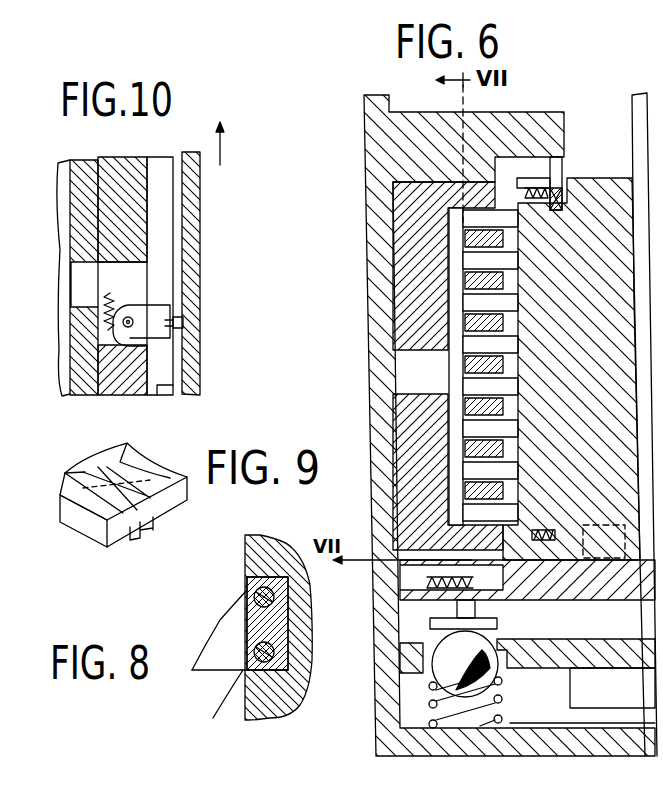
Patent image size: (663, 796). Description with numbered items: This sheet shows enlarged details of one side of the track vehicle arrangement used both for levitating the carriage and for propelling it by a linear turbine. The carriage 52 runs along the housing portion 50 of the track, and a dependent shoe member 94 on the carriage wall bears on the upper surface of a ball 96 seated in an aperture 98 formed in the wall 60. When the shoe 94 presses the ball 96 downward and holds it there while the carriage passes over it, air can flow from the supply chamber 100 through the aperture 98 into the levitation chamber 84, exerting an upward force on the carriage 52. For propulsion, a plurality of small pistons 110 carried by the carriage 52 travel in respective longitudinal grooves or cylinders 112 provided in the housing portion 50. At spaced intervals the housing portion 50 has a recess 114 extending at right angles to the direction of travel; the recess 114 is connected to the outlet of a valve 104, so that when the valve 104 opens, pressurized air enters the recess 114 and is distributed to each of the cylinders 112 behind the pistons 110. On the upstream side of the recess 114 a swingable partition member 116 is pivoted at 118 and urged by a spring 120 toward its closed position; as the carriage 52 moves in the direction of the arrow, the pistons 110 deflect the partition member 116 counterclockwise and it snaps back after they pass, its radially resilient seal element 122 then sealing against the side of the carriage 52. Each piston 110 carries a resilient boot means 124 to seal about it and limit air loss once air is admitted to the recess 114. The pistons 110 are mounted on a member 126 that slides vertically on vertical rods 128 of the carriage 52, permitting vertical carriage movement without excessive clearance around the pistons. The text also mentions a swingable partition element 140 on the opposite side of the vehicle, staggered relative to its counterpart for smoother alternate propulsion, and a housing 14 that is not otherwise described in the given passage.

In FIG. 6, the housing 14 is at (656, 350).
In FIG. 6, the housing portion 50 is at (366, 112).
In FIG. 10, the housing portion 50 is at (78, 162).
In FIG. 6, the carriage 52 is at (582, 168).
In FIG. 10, the carriage 52 is at (190, 189).
In FIG. 8, the carriage 52 is at (296, 713).
In FIG. 6, the wall 60 is at (655, 646).
In FIG. 6, the levitation chamber 84 is at (576, 621).
In FIG. 6, the shoe member 94 is at (436, 628).
In FIG. 6, the ball 96 is at (452, 660).
In FIG. 6, the aperture 98 is at (495, 637).
In FIG. 6, the supply chamber 100 is at (536, 714).
In FIG. 6, the valve 104 is at (389, 366).
In FIG. 10, the valve 104 is at (65, 347).
In FIG. 6, the piston 110 is at (393, 251).
In FIG. 10, the piston 110 is at (180, 378).
In FIG. 9, the piston 110 is at (123, 515).
In FIG. 8, the piston 110 is at (233, 673).
In FIG. 6, the groove or cylinder arrangement 112 is at (468, 462).
In FIG. 6, the recess 114 is at (457, 413).
In FIG. 10, the recess 114 is at (143, 272).
In FIG. 10, the partition member 116 is at (165, 292).
In FIG. 10, the pivot 118 is at (128, 316).
In FIG. 10, the spring 120 is at (108, 298).
In FIG. 10, the seal element 122 is at (183, 318).
In FIG. 9, the boot means 124 is at (105, 462).
In FIG. 8, the member 126 is at (212, 670).
In FIG. 8, the vertical rod 128 is at (258, 597).
In FIG. 10, the swingable partition element 140 is at (200, 333).